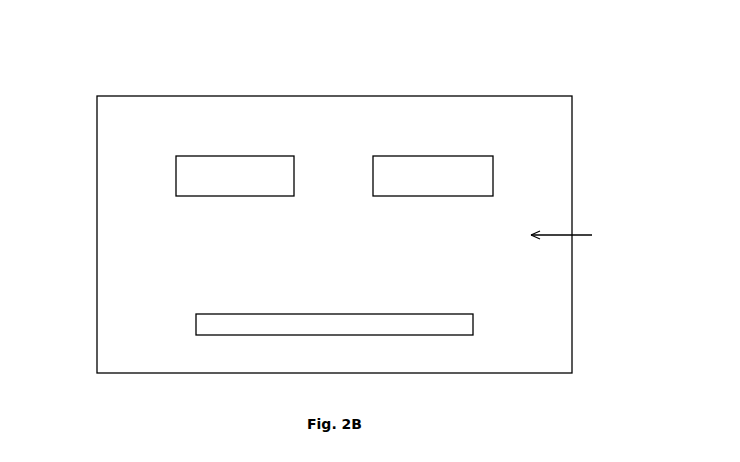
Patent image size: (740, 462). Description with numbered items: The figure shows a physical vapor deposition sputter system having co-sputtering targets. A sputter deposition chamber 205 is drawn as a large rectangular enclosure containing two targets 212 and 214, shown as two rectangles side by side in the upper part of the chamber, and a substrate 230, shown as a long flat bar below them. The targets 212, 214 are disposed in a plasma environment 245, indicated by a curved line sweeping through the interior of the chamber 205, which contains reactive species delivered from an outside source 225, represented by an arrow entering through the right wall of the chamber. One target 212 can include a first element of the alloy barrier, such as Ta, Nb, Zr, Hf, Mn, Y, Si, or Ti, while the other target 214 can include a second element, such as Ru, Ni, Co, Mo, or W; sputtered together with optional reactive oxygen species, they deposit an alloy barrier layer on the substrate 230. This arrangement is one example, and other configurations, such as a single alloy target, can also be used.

The sputter deposition chamber 205 is at (106, 66).
The target 212 is at (233, 175).
The target 214 is at (433, 175).
The outside source 225 is at (553, 233).
The substrate 230 is at (215, 324).
The plasma environment 245 is at (357, 255).